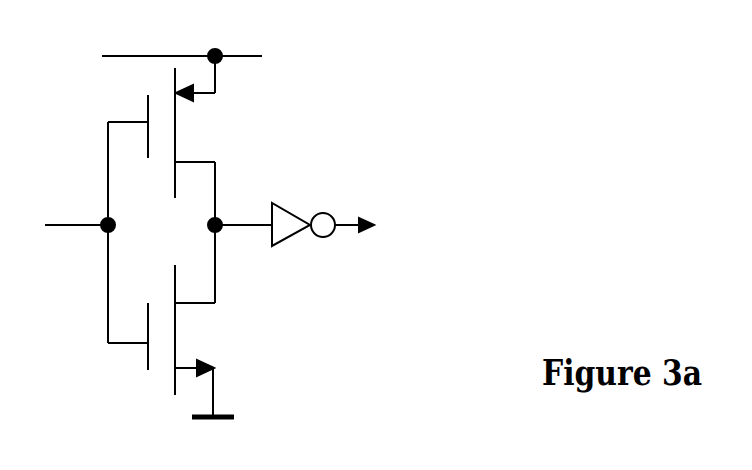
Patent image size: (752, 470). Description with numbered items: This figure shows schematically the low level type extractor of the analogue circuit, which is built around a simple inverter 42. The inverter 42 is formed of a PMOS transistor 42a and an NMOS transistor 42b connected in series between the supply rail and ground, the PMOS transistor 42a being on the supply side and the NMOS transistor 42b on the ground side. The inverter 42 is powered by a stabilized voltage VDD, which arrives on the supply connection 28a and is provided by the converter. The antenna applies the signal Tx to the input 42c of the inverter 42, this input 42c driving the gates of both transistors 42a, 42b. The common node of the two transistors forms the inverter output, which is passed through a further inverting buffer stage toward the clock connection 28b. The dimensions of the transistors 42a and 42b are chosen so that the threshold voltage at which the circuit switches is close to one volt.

The supply connection 28a is at (232, 56).
The clock connection 28b is at (325, 204).
The inverter 42 is at (250, 174).
The PMOS transistor 42a is at (173, 137).
The NMOS transistor 42b is at (175, 330).
The input 42c is at (75, 225).